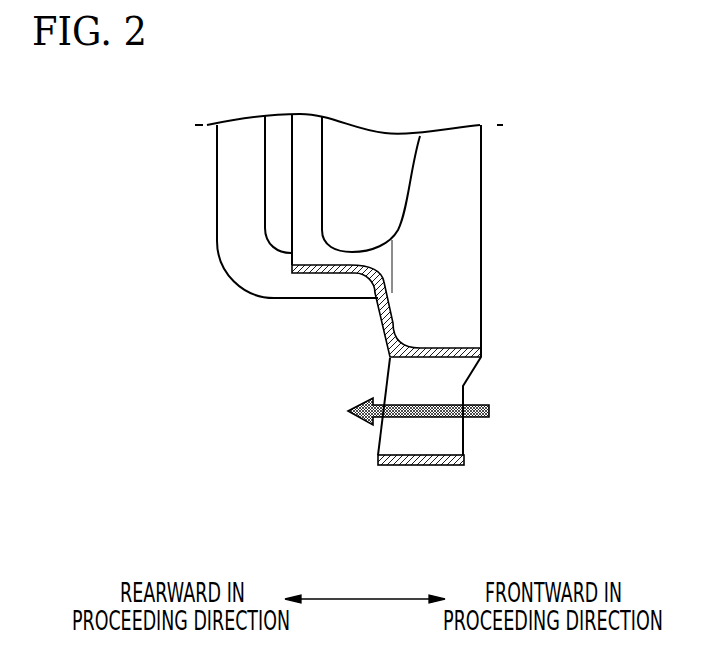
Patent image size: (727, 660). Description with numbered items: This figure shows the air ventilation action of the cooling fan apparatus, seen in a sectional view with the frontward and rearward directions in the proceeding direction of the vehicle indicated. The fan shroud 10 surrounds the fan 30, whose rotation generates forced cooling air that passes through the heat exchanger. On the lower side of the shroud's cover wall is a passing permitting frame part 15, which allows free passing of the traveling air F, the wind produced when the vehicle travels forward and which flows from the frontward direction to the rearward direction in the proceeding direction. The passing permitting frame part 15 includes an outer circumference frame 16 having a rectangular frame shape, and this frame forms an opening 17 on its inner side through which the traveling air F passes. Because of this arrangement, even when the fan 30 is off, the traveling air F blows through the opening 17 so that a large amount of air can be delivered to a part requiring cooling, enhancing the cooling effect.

The fan shroud 10 is at (237, 241).
The fan 30 is at (368, 192).
The passing permitting frame part 15 is at (379, 437).
The outer circumference frame 16 is at (410, 467).
The opening 17 is at (437, 432).
The traveling air F is at (478, 405).